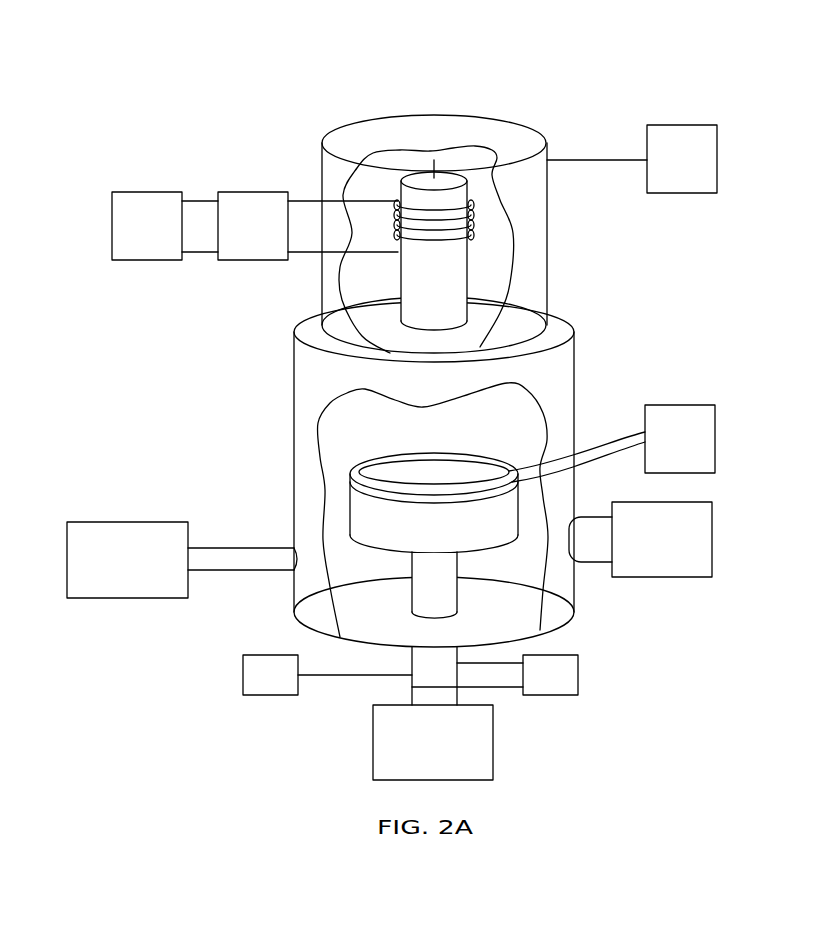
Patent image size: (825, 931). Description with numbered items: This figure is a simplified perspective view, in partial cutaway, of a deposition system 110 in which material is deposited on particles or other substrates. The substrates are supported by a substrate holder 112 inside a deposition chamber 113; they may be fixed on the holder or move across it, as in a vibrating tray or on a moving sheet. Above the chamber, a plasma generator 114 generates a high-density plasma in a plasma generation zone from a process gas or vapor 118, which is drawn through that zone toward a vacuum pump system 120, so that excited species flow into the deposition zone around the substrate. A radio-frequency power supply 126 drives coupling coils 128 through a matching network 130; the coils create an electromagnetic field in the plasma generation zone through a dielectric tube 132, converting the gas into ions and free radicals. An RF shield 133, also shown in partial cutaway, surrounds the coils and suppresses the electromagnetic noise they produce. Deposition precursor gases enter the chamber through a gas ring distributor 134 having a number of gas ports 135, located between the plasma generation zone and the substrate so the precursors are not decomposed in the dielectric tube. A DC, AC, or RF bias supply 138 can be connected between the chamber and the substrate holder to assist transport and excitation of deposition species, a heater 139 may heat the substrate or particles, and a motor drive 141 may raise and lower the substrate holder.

The deposition system 110 is at (713, 110).
The substrate holder 112 is at (450, 539).
The deposition chamber 113 is at (575, 367).
The plasma generator 114 is at (480, 206).
The process gas or vapor 118 is at (717, 158).
The vacuum pump system 120 is at (712, 540).
The radio-frequency power supply 126 is at (146, 192).
The coupling coils 128 is at (473, 233).
The matching network 130 is at (253, 192).
The dielectric tube 132 is at (347, 188).
The RF shield 133 is at (508, 128).
The gas ring distributor 134 is at (468, 458).
The gas ports 135 is at (409, 458).
The bias supply 138 is at (577, 672).
The heater 139 is at (243, 675).
The motor drive 141 is at (493, 740).